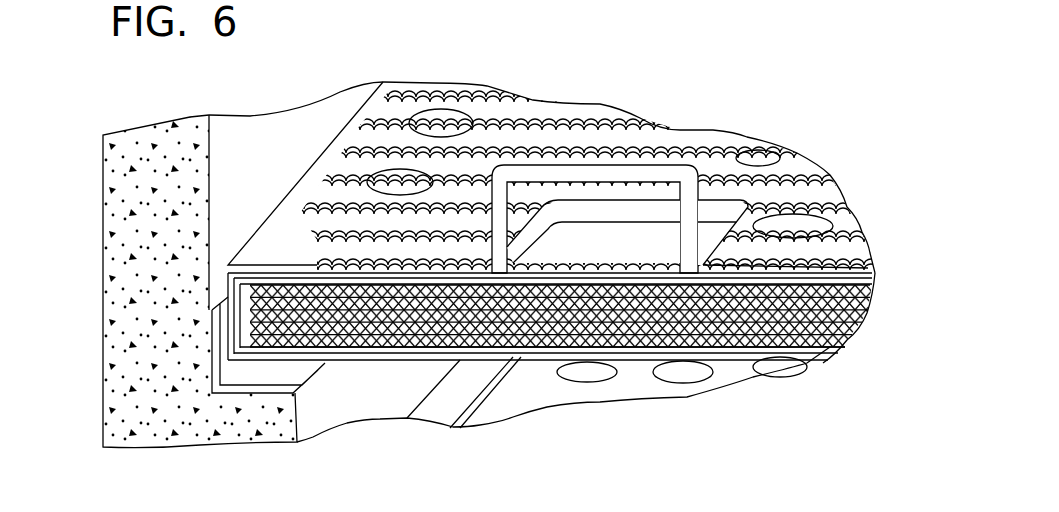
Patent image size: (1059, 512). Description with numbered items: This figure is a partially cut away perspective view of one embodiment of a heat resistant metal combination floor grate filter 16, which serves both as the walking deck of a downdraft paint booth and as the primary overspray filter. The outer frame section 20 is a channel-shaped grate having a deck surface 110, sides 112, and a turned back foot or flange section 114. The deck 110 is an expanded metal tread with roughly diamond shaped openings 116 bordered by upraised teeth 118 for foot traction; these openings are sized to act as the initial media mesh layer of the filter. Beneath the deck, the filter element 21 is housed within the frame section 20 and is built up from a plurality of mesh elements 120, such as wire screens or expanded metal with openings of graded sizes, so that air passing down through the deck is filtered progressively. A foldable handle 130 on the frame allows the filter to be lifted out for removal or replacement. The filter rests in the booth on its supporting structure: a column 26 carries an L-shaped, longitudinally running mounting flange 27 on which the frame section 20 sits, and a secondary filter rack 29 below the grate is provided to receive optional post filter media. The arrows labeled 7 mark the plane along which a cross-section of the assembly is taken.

The section line 7- 7 is at (713, 120).
The combination floor grate filter 16 is at (607, 92).
The outer frame section 20 is at (309, 162).
The filter element 21 is at (638, 360).
The column 26 is at (103, 253).
The mounting flange 27 is at (322, 395).
The secondary filter rack 29 is at (738, 372).
The deck surface 110 is at (355, 125).
The sides 112 is at (240, 283).
The turned back foot or flange section 114 is at (306, 368).
The openings 116 is at (443, 118).
The upraised teeth 118 is at (408, 100).
The mesh elements 120 is at (903, 352).
The foldable handle 130 is at (712, 128).